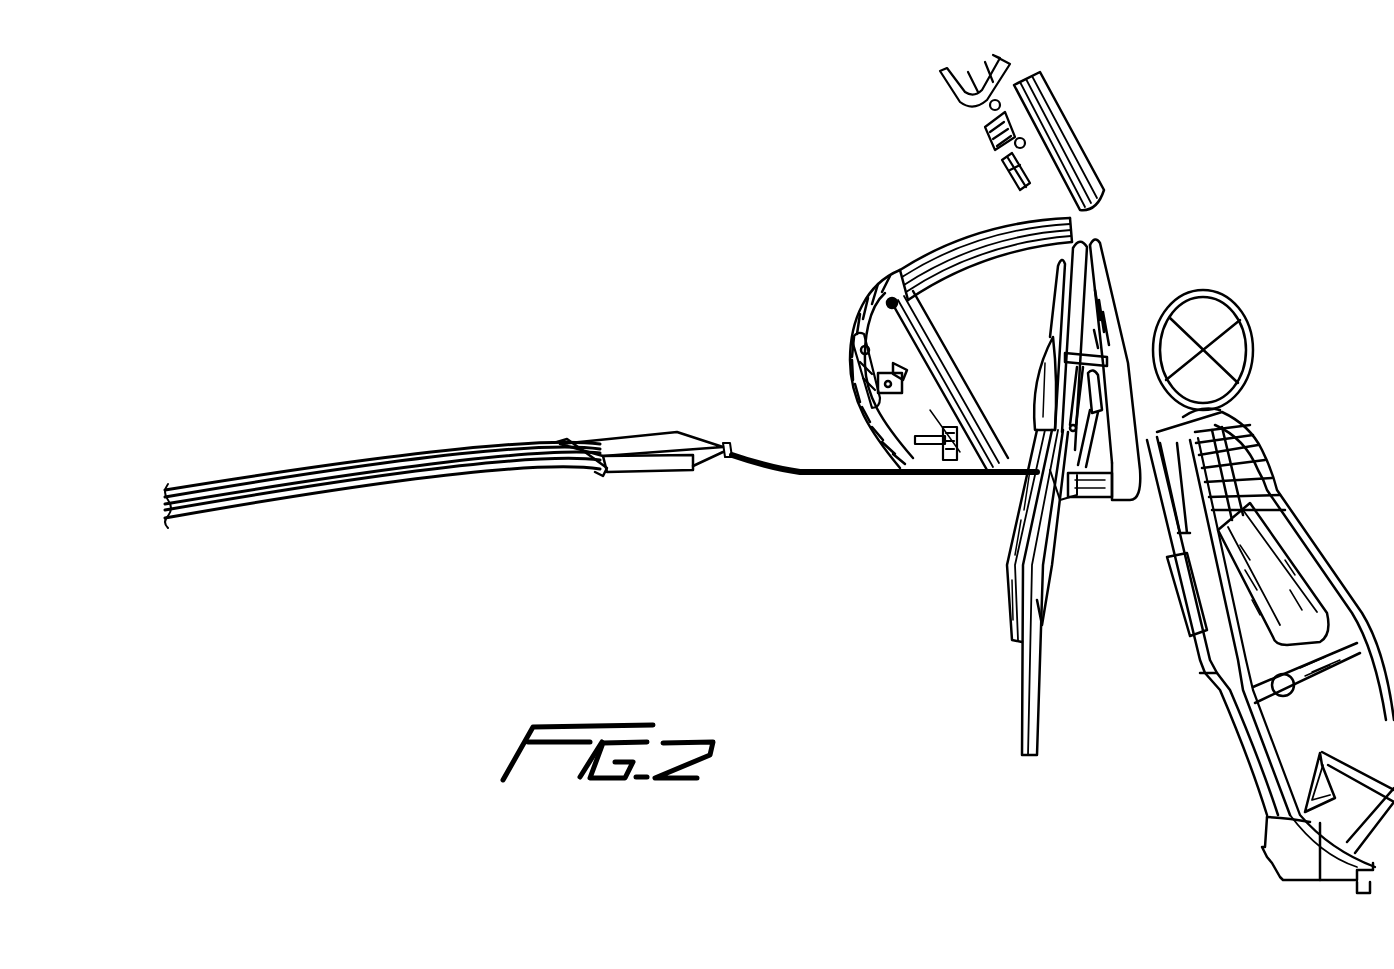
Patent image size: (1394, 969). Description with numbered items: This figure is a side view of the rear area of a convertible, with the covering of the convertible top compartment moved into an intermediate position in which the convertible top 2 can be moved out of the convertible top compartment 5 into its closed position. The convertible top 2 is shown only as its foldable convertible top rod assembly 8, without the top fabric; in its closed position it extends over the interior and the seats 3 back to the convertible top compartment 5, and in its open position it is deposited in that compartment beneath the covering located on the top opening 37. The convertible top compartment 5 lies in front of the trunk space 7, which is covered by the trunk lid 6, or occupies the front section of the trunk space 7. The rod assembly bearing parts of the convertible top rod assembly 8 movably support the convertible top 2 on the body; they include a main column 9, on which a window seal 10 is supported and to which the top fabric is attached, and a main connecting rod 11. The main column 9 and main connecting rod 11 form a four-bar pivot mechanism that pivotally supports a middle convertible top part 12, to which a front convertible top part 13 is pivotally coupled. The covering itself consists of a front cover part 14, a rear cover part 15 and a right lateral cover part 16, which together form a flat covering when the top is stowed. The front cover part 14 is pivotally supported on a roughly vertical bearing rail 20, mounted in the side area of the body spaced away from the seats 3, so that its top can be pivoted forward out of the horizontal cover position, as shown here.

The convertible top 2 is at (862, 287).
The seats 3 is at (1311, 543).
The convertible top compartment 5 is at (813, 541).
The trunk lid 6 is at (426, 451).
The trunk space 7 is at (483, 546).
The convertible top rod assembly 8 is at (975, 124).
The main column 9 is at (920, 410).
The window seal 10 is at (940, 372).
The main connecting rod 11 is at (850, 368).
The middle convertible top part 12 is at (969, 238).
The front convertible top part 13 is at (1068, 126).
The front cover part 14 is at (1107, 312).
The rear cover part 15 is at (1082, 282).
The right lateral cover part 16 is at (1058, 305).
The bearing rail 20 is at (1022, 723).
The top opening 37 is at (769, 450).